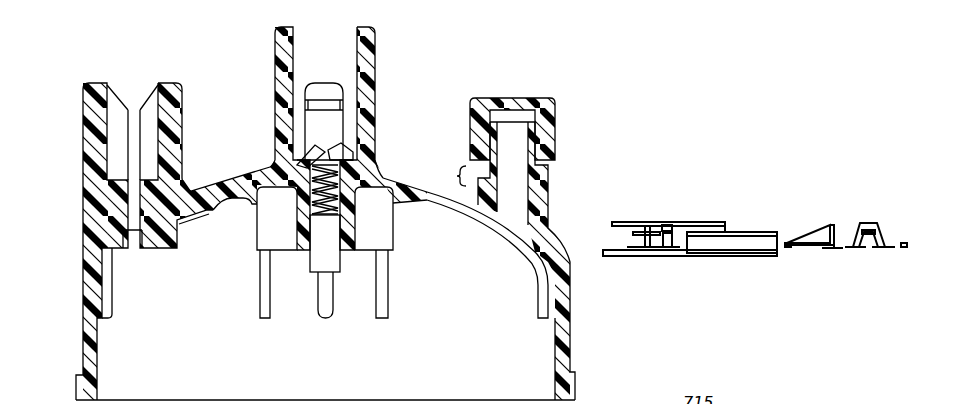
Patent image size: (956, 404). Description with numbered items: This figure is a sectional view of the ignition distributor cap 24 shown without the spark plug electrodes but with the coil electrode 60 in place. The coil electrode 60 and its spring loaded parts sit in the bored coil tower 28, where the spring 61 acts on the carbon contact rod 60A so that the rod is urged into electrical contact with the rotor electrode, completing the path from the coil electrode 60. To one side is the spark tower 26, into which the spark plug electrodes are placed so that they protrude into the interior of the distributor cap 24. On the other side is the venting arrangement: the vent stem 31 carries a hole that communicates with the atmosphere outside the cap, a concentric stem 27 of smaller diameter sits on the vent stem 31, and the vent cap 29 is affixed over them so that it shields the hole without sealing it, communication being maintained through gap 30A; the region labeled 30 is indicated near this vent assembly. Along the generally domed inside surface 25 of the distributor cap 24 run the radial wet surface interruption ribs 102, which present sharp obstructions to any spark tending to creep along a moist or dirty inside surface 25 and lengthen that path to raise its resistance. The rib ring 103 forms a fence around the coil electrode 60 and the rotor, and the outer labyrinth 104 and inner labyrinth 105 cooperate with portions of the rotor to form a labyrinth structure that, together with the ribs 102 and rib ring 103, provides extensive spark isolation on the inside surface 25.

The distributor cap 24 is at (522, 52).
The inside surface 25 is at (555, 367).
The spark tower 26 is at (83, 100).
The concentric stem 27 is at (548, 164).
The coil tower 28 is at (375, 66).
The vent cap 29 is at (560, 118).
The outlet stem 30 is at (590, 138).
The gap 30A is at (443, 176).
The vent stem 31 is at (550, 192).
The coil electrode 60 is at (318, 126).
The carbon contact rod 60A is at (350, 255).
The spring 61 is at (323, 220).
The wet surface interruption ribs 102 is at (109, 256).
The rib ring 103 is at (213, 224).
The outer labyrinth 104 is at (395, 250).
The inner labyrinth 105 is at (378, 180).